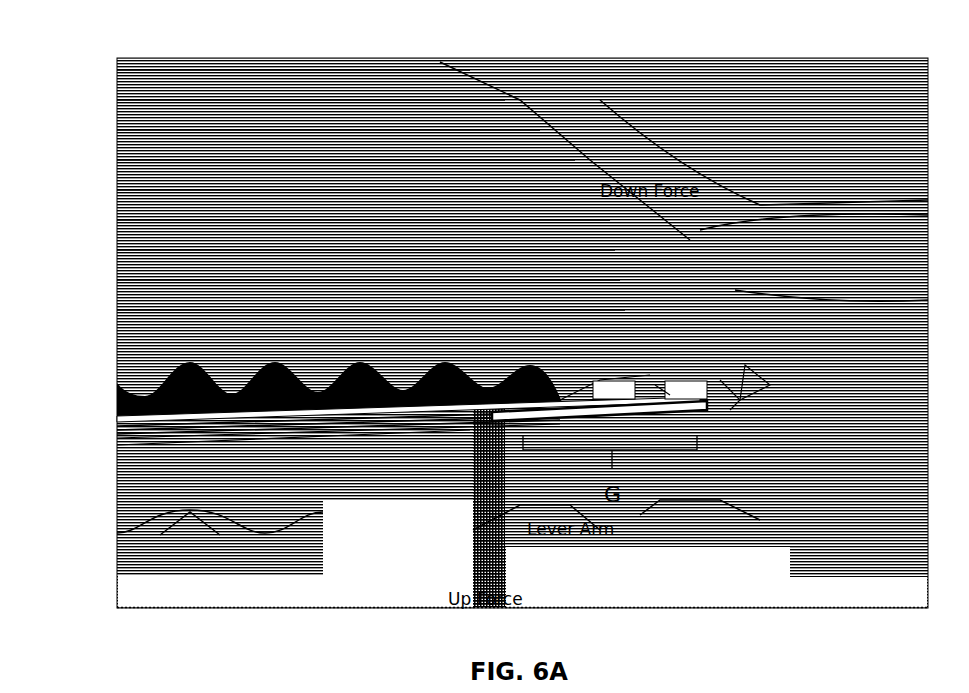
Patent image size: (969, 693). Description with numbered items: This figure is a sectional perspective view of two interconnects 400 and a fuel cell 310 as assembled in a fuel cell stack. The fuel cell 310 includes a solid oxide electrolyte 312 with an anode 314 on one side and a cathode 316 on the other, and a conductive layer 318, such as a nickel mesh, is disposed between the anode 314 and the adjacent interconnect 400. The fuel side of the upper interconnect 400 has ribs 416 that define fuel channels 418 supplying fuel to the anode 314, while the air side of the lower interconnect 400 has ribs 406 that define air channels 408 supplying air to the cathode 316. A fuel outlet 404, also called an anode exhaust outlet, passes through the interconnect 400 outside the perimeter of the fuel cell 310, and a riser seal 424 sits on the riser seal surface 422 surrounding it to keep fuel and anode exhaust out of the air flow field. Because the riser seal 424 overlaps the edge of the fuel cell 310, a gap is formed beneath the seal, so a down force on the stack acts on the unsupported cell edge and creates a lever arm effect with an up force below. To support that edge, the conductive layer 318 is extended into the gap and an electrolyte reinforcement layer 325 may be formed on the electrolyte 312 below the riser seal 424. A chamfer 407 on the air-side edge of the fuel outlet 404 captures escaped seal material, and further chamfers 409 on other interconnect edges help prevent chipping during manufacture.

The fuel cell 310 is at (98, 418).
The solid oxide electrolyte 312 is at (727, 388).
The anode 314 is at (205, 423).
The cathode 316 is at (130, 405).
The conductive layer 318 is at (410, 420).
The electrolyte reinforcement layer 325 is at (600, 418).
The interconnect 400 is at (360, 352).
The fuel outlet 404 is at (782, 112).
The rib 406 is at (490, 375).
The chamfer 407 is at (748, 372).
The air channel 408 is at (190, 512).
The chamfer 409 is at (735, 290).
The rib 416 is at (408, 122).
The fuel channel 418 is at (445, 76).
The riser seal surface 422 is at (591, 376).
The riser seal 424 is at (664, 393).